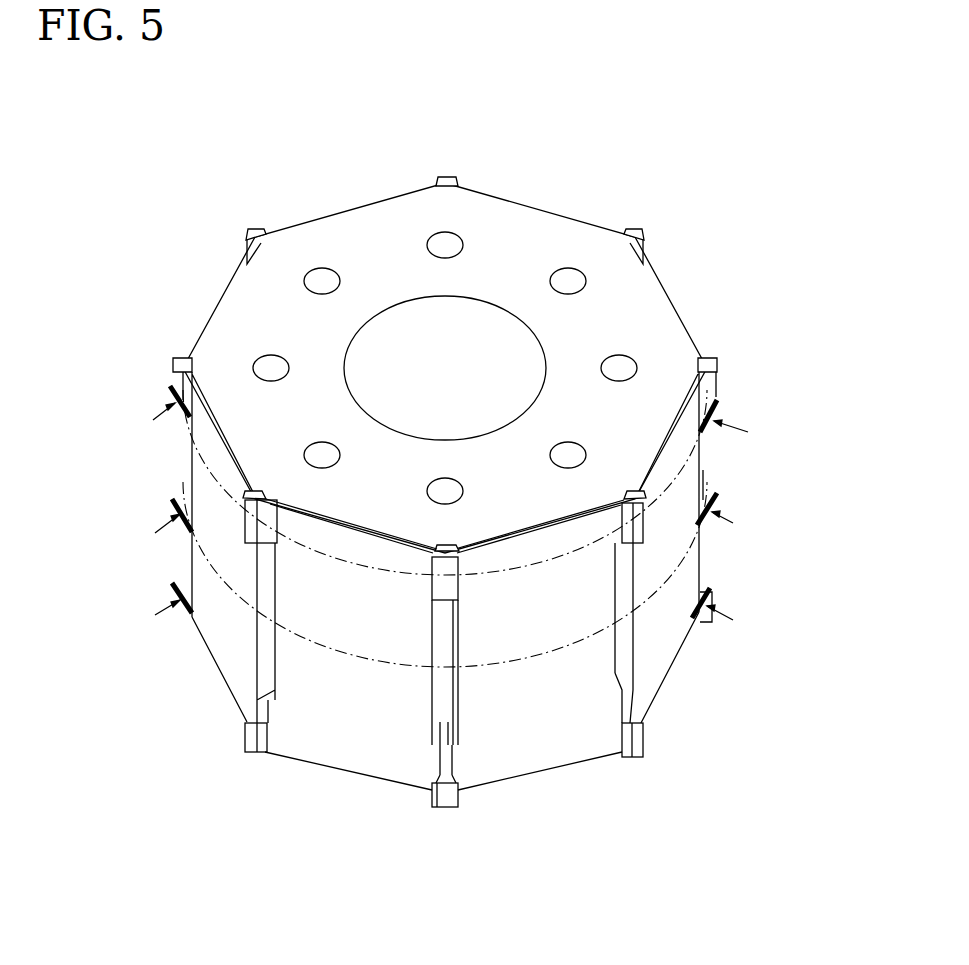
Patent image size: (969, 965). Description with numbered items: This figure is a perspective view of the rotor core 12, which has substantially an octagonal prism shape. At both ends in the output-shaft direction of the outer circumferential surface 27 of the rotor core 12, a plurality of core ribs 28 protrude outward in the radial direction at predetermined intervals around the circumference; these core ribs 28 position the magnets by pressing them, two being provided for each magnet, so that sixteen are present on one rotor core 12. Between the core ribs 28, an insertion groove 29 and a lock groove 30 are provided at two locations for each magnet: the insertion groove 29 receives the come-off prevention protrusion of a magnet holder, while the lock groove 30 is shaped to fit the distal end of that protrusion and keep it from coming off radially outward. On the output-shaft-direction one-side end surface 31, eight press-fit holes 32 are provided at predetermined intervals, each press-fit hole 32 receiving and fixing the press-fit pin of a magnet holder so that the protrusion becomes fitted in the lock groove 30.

The rotor core 12 is at (700, 227).
The outer circumferential surface 27 is at (340, 695).
The core rib 28 is at (450, 577).
The insertion groove 29 is at (622, 655).
The lock groove 30 is at (627, 708).
The output-shaft-direction one-side end surface 31 is at (348, 232).
The press-fit hole 32 is at (443, 243).